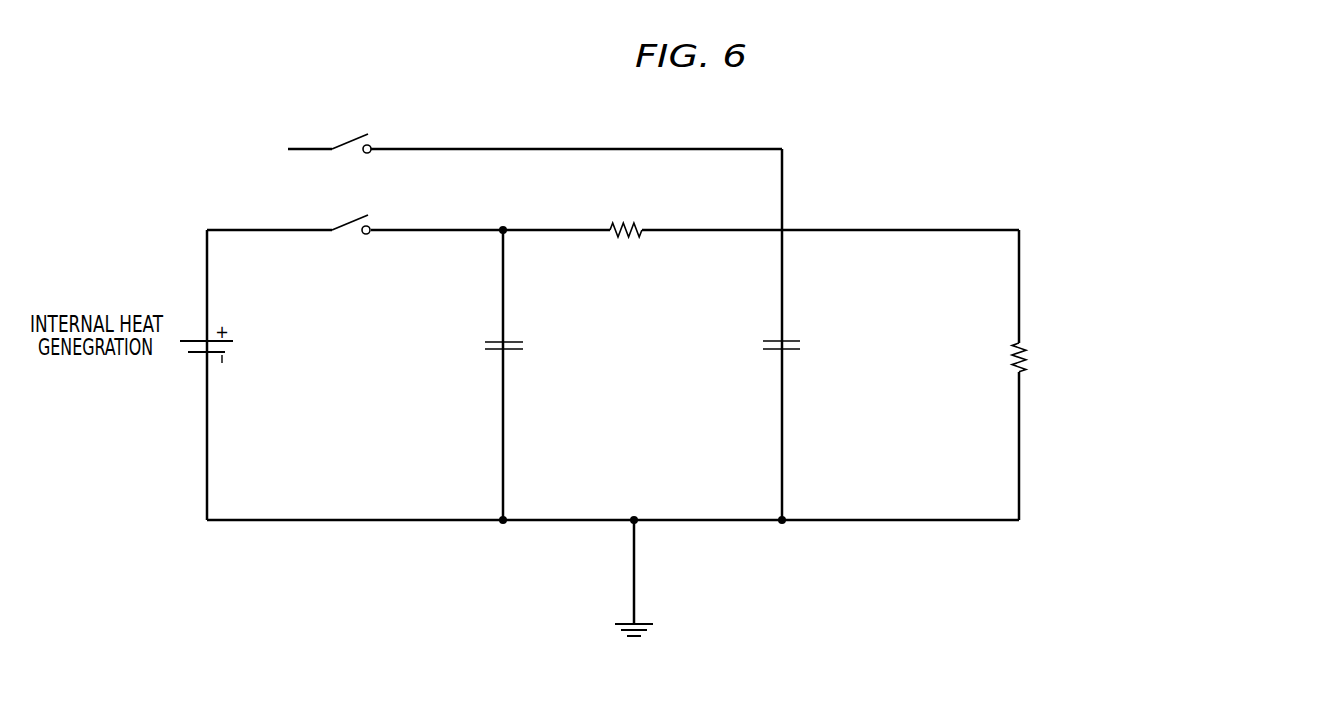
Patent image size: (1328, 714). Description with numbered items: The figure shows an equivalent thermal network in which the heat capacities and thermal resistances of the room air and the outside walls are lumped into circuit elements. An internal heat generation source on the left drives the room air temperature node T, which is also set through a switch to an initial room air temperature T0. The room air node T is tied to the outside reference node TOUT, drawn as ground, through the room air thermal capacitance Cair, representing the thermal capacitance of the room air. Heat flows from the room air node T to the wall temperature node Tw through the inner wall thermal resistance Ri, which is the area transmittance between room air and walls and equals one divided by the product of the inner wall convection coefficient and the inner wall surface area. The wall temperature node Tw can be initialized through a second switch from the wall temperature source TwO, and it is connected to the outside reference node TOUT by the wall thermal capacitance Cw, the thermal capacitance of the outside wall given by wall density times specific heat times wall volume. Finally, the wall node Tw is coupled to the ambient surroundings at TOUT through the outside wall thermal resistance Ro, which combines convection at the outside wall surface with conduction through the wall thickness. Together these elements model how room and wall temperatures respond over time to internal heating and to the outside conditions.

The initial wall temperature source TwO is at (515, 131).
The initial room air temperature source T0 is at (387, 213).
The inner wall thermal resistance Ri is at (622, 255).
The room air thermal capacitance Cair is at (593, 343).
The wall thermal capacitance Cw is at (839, 342).
The outside wall thermal resistance Ro is at (1165, 359).
The room air temperature node T is at (513, 497).
The wall temperature node Tw is at (797, 496).
The outside ambient temperature node TOUT is at (652, 578).